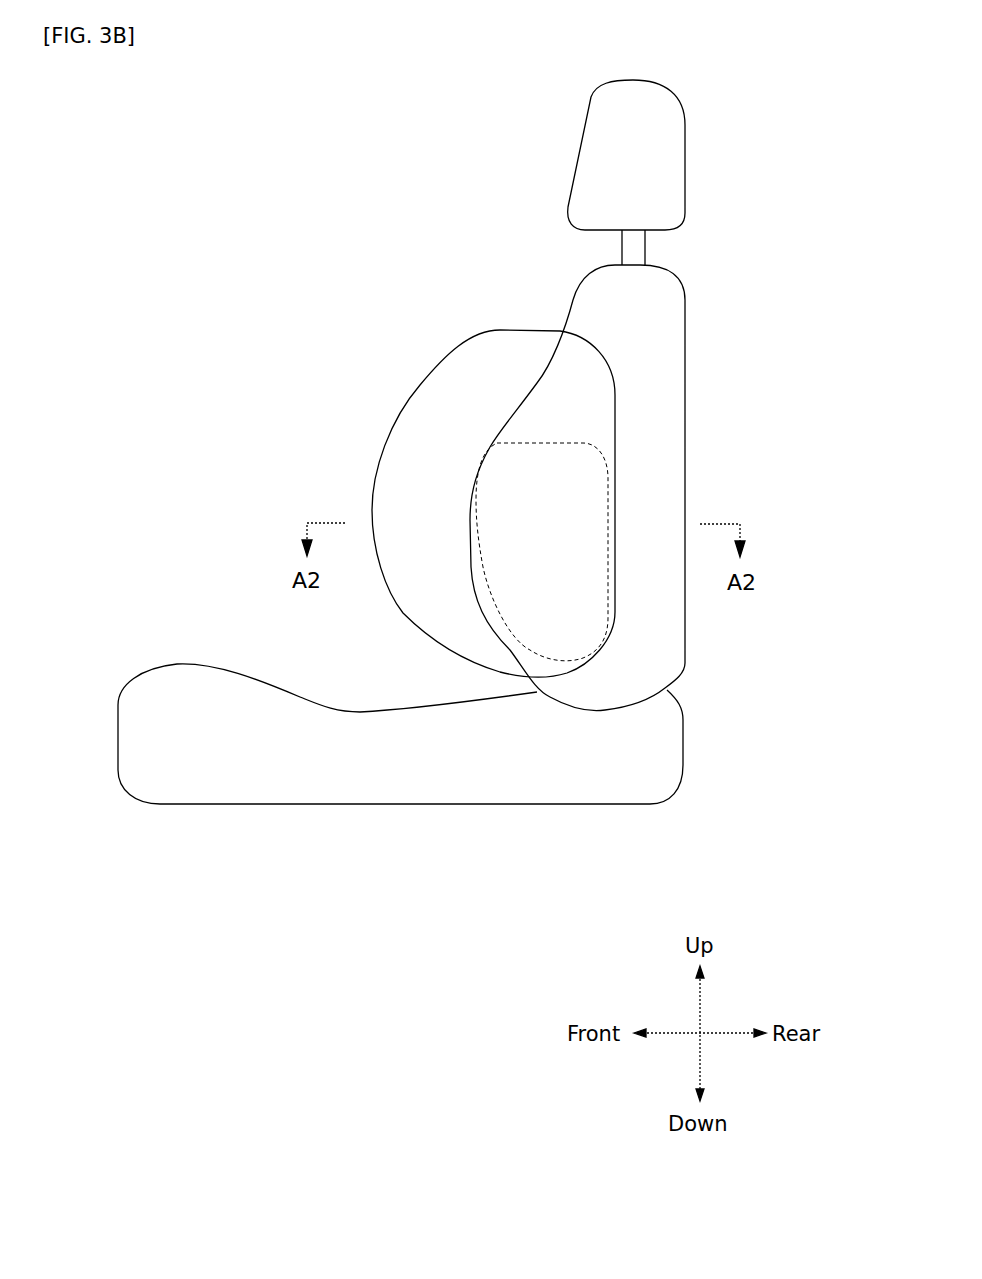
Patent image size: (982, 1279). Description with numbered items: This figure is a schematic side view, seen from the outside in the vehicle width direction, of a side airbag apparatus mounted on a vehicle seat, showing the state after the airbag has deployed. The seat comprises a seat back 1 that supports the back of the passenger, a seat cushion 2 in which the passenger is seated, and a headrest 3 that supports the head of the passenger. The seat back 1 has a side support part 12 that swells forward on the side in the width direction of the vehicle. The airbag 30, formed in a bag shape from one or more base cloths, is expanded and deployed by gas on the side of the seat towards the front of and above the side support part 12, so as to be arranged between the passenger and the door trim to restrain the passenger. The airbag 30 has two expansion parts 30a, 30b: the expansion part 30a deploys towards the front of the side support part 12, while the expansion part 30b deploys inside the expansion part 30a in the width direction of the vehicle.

The seat back 1 is at (686, 307).
The seat cushion 2 is at (174, 661).
The headrest 3 is at (687, 160).
The side support part 12 is at (493, 445).
The airbag 30 is at (569, 450).
The expansion part 30a is at (450, 350).
The expansion part 30b is at (590, 451).